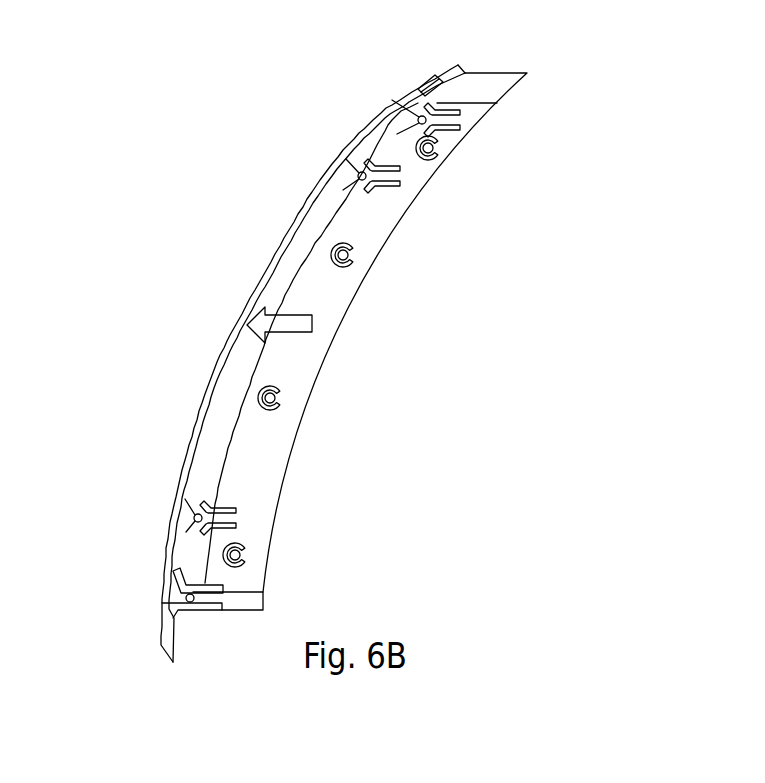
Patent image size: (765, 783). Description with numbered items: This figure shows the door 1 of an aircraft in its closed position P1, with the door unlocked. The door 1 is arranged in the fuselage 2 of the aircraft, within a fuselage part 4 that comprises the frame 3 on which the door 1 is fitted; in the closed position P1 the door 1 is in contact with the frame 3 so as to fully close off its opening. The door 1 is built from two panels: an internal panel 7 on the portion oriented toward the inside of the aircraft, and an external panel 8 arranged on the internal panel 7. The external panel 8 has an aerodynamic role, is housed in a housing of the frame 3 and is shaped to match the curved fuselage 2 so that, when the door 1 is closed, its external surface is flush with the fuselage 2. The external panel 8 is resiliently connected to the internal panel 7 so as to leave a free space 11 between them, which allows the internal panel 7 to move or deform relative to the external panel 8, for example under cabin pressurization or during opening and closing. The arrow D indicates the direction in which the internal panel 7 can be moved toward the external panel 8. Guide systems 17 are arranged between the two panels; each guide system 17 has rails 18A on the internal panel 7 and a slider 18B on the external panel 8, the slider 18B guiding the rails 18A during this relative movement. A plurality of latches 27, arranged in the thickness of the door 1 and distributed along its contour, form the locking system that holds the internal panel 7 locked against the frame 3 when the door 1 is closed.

The closed position P1 is at (218, 111).
The door 1 is at (313, 134).
The fuselage 2 is at (448, 74).
The frame 3 is at (483, 92).
The fuselage part 4 is at (540, 53).
The internal panel 7 is at (330, 318).
The external panel 8 is at (250, 290).
The free space 11 is at (225, 370).
The guide systems 17 is at (256, 509).
The rails 18A is at (141, 539).
The slider 18B is at (124, 478).
The latches 27 is at (305, 394).
The arrow D is at (292, 330).